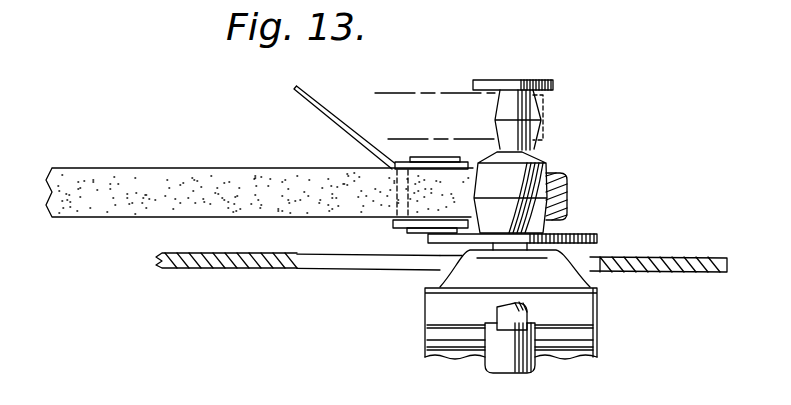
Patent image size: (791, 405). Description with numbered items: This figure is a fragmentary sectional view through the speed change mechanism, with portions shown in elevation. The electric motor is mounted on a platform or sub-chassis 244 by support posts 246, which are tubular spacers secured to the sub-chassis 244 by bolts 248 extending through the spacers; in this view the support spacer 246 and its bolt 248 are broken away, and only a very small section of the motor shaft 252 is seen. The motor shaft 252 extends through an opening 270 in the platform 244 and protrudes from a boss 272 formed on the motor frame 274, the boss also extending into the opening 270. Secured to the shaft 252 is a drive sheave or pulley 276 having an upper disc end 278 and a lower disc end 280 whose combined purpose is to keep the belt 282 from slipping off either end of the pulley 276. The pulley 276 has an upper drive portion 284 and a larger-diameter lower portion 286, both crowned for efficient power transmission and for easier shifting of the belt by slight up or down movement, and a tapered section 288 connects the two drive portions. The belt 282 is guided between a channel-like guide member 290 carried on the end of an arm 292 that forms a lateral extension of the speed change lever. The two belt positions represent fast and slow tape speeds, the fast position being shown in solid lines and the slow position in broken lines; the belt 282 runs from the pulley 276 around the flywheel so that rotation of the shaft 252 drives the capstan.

The platform 244 is at (246, 270).
The support post 246 is at (540, 365).
The bolt 248 is at (497, 316).
The motor shaft 252 is at (455, 256).
The opening 270 is at (332, 270).
The boss 272 is at (483, 270).
The motor frame 274 is at (590, 323).
The drive pulley 276 is at (541, 152).
The upper disc end 278 is at (552, 84).
The lower disc end 280 is at (597, 240).
The belt 282 is at (178, 180).
The upper drive portion 284 is at (537, 122).
The lower portion 286 is at (567, 199).
The tapered section 288 is at (490, 153).
The guide member 290 is at (432, 157).
The arm 292 is at (321, 106).